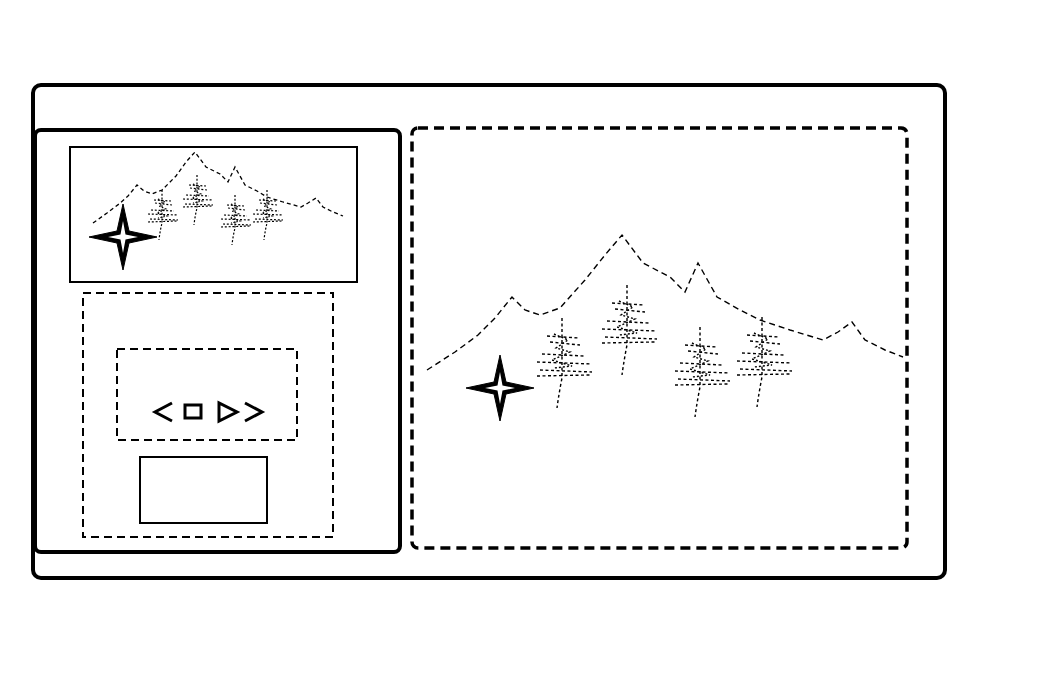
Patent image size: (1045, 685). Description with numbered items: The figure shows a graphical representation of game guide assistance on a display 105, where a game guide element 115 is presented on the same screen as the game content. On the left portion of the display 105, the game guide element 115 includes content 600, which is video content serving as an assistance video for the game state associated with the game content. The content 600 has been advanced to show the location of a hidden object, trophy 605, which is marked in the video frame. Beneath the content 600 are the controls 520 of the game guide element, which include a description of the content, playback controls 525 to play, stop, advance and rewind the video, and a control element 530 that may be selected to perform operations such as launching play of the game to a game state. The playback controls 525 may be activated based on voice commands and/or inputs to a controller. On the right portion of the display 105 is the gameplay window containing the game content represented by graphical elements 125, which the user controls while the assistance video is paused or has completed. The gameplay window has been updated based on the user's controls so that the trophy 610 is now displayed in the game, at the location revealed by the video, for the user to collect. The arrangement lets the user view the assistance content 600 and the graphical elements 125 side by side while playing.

The display 105 is at (827, 95).
The game guide element 115 is at (210, 128).
The graphical elements 125 is at (522, 214).
The controls 520 is at (327, 315).
The playback controls 525 is at (297, 400).
The control element 530 is at (140, 470).
The content 600 is at (303, 150).
The trophy 605 is at (112, 232).
The trophy 610 is at (515, 415).